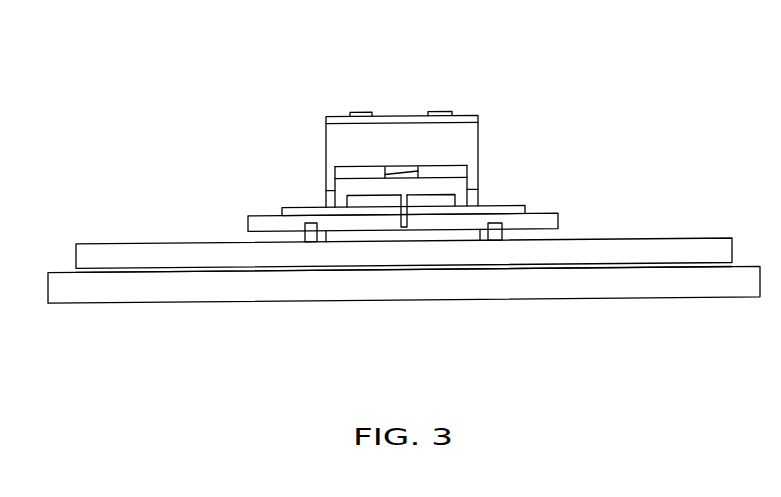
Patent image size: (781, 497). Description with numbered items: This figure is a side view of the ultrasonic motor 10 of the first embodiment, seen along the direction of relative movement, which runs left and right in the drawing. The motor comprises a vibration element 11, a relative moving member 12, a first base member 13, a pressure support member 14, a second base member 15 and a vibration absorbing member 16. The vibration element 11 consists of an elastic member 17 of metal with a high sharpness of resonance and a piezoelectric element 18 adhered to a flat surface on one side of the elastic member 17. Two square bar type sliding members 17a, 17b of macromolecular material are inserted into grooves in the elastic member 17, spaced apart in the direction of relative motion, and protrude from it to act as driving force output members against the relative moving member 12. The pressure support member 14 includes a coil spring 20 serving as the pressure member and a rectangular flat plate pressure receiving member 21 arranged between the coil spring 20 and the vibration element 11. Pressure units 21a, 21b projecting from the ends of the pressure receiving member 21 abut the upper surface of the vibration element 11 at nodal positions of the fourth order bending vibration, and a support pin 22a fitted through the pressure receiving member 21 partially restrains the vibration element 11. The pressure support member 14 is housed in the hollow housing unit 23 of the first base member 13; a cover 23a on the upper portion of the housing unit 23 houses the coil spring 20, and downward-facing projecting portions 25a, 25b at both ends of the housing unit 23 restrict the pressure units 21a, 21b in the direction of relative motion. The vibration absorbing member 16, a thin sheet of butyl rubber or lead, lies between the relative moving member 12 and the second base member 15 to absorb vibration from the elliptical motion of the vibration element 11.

The ultrasonic motor 10 is at (294, 90).
The vibration element 11 is at (556, 190).
The relative moving member 12 is at (62, 250).
The first base member 13 is at (485, 106).
The pressure support member 14 is at (429, 157).
The second base member 15 is at (169, 308).
The vibration absorbing member 16 is at (110, 280).
The elastic member 17 is at (560, 216).
The sliding member 17a is at (310, 233).
The sliding member 17b is at (495, 238).
The piezoelectric element 18 is at (503, 205).
The coil spring 20 is at (383, 172).
The pressure receiving member 21 is at (365, 187).
The pressure unit 21a is at (342, 198).
The pressure unit 21b is at (462, 193).
The support pin 22a is at (405, 228).
The housing unit 23 is at (468, 138).
The cover 23a is at (383, 116).
The projecting portion 25a is at (326, 182).
The projecting portion 25b is at (475, 178).